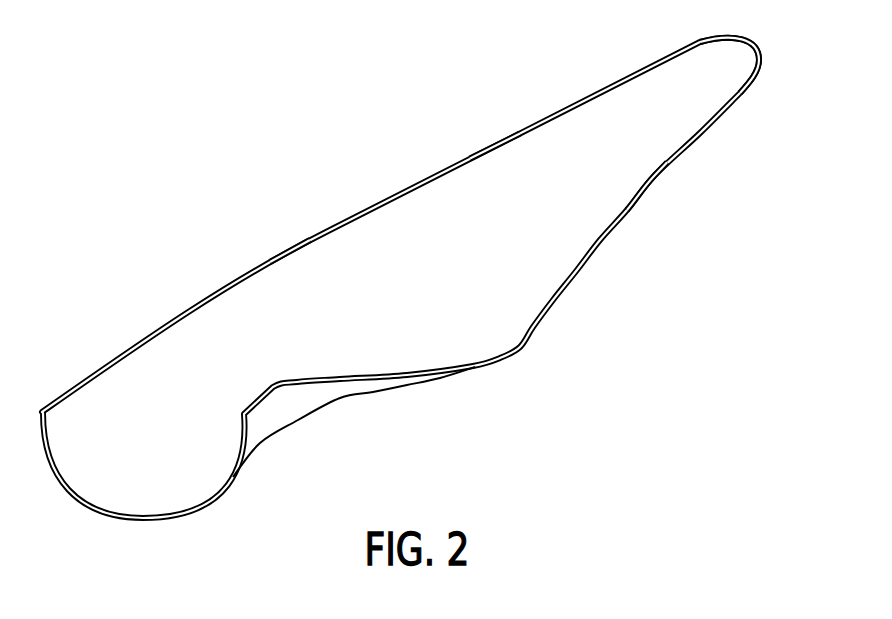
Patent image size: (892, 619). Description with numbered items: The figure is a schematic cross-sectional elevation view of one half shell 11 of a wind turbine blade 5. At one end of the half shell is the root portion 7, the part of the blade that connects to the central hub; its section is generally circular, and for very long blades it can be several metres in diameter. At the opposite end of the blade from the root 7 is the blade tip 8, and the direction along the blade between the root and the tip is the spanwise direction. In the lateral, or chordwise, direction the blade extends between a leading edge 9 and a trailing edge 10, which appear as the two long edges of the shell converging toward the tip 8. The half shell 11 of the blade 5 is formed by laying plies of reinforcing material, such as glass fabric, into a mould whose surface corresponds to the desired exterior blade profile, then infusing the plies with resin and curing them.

The wind turbine blade 5 is at (347, 167).
The root portion 7 is at (240, 452).
The blade tip 8 is at (742, 37).
The leading edge 9 is at (493, 142).
The trailing edge 10 is at (650, 192).
The half shell 11 is at (290, 247).